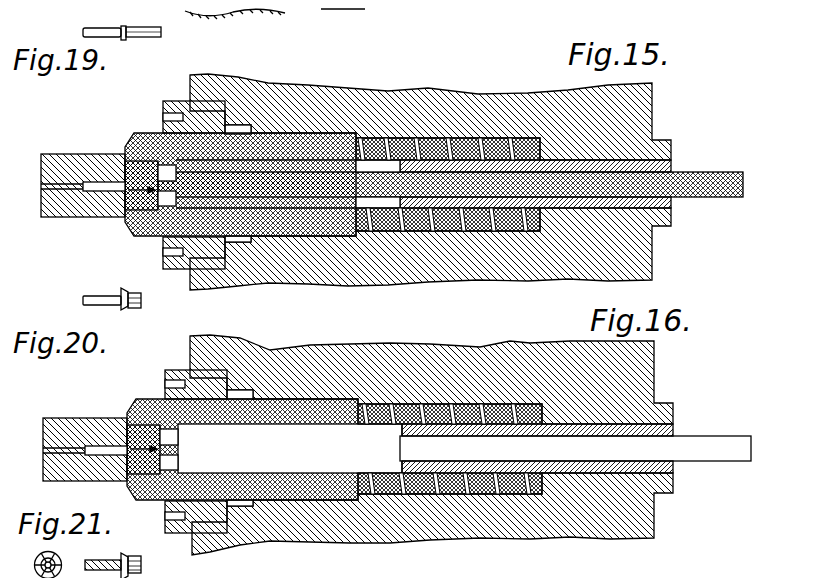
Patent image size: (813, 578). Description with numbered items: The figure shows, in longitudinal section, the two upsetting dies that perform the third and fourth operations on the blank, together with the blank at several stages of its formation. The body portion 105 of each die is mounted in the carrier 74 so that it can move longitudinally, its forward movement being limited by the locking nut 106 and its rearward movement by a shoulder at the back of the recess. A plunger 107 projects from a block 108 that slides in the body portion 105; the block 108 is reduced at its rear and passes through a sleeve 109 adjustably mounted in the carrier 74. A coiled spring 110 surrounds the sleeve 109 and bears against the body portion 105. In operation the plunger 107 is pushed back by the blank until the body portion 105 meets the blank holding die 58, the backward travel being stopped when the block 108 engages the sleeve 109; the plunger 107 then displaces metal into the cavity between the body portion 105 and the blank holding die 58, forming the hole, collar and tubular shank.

In FIG. 15, the carrier 74 is at (530, 64).
In FIG. 16, the carrier 74 is at (431, 432).
In FIG. 15, the body portion of the die 105 is at (300, 65).
In FIG. 15, the locking nut 106 is at (137, 108).
In FIG. 15, the plunger 107 is at (118, 203).
In FIG. 15, the block 108 is at (296, 278).
In FIG. 15, the sleeve 109 is at (657, 153).
In FIG. 15, the coiled spring 110 is at (436, 66).
In FIG. 16, the blank holding die 58 is at (85, 434).